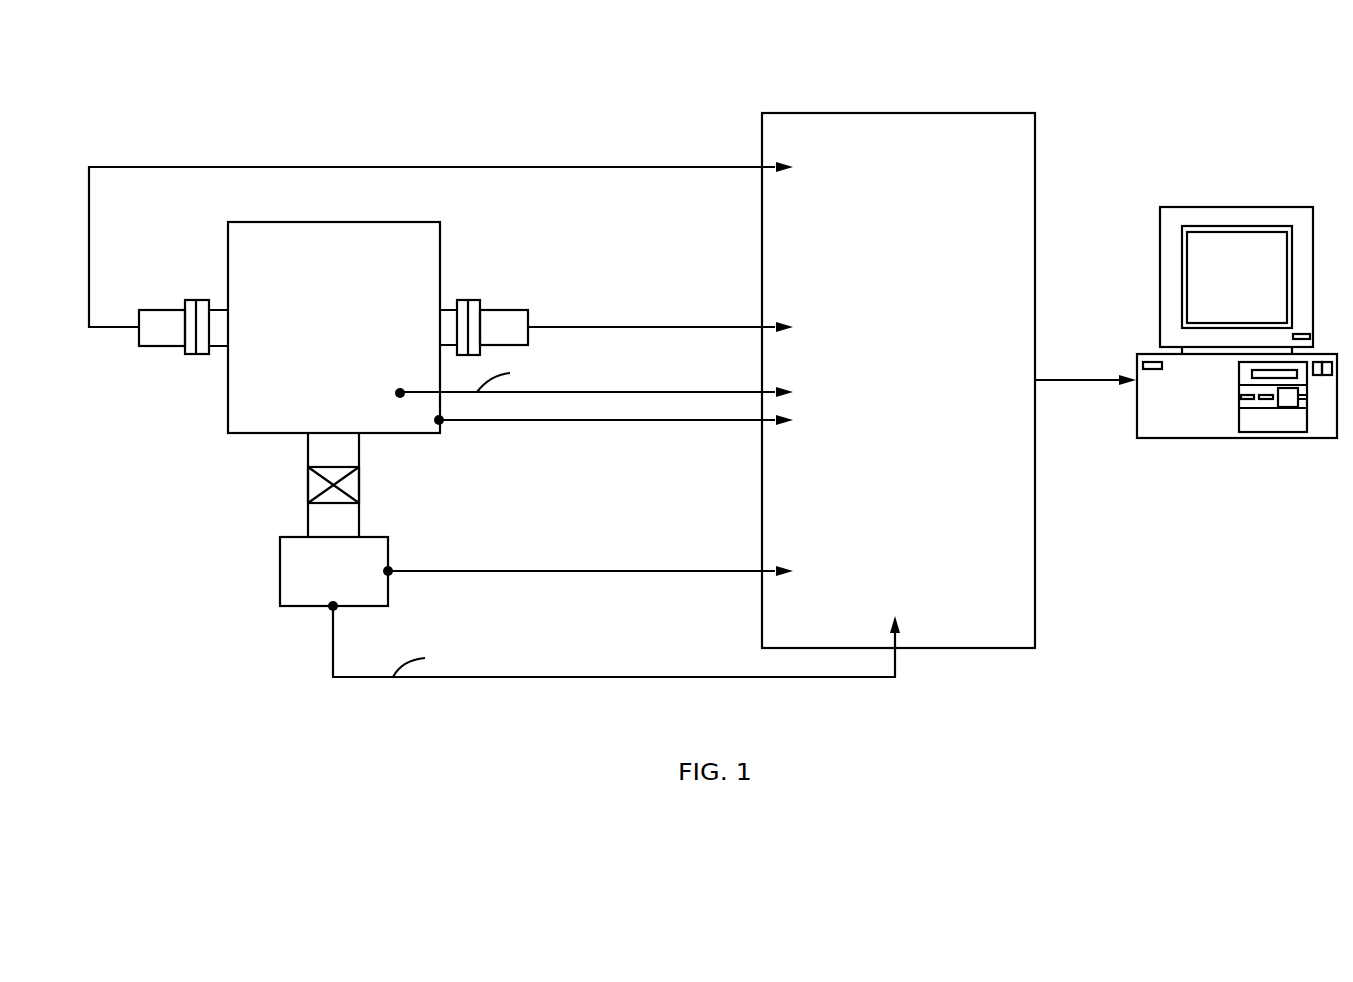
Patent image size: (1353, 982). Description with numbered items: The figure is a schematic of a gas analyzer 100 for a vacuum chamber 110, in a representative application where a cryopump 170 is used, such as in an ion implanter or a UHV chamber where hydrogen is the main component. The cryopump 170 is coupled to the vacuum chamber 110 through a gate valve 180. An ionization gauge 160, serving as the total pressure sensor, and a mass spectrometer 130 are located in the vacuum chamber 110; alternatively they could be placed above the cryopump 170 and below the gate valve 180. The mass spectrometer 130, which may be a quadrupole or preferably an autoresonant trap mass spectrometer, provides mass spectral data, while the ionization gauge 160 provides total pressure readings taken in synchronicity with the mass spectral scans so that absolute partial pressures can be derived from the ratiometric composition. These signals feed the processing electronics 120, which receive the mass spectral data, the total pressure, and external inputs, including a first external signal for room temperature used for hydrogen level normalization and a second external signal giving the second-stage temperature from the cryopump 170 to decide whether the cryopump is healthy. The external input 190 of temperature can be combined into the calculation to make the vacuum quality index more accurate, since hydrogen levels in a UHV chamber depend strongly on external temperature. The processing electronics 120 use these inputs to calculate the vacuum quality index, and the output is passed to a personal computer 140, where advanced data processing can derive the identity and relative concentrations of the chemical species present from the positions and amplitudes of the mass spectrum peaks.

The gas analyzer 100 is at (278, 96).
The vacuum chamber 110 is at (348, 367).
The processing electronics 120 is at (958, 113).
The mass spectrometer 130 is at (485, 300).
The personal computer 140 is at (1246, 207).
The ionization gauge 160 is at (205, 300).
The cryopump 170 is at (280, 573).
The gate valve 180 is at (316, 486).
The external input 190 is at (708, 421).